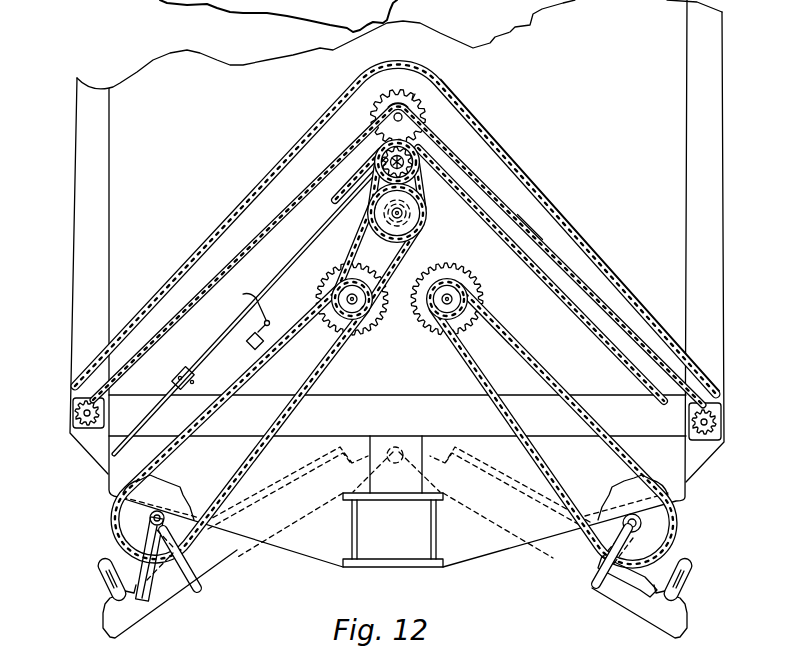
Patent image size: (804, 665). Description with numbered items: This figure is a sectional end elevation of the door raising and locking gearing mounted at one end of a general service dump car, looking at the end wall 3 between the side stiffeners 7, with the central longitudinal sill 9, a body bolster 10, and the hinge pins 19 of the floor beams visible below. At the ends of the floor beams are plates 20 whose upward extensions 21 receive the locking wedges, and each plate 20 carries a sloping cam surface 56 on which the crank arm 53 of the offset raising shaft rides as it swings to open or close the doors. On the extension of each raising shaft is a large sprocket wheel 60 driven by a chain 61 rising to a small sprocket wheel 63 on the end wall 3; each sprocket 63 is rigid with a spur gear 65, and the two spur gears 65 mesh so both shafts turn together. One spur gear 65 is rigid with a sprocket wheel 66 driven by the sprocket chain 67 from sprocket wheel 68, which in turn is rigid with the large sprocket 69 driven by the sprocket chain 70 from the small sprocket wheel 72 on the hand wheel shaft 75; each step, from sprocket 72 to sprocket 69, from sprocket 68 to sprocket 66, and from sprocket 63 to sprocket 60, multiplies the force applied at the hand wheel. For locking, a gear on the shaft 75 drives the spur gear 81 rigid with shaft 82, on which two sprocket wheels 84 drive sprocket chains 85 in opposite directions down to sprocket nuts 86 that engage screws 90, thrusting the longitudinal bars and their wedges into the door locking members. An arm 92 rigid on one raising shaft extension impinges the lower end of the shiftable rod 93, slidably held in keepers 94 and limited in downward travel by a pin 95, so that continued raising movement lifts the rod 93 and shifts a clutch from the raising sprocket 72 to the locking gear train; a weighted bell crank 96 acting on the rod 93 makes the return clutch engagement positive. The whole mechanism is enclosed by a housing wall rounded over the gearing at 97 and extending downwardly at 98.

The end wall 3 is at (399, 44).
The side stiffener 7 is at (73, 216).
The central longitudinal sill 9 is at (393, 501).
The body bolster 10 is at (395, 502).
The hinge pin 19 is at (400, 448).
The plate 20 is at (132, 622).
The upward extension 21 is at (99, 575).
The crank arm 53 is at (200, 578).
The cam surface 56 is at (168, 597).
The sprocket wheel 60 is at (182, 499).
The chain 61 is at (289, 412).
The sprocket wheel 63 is at (460, 299).
The spur gear 65 is at (345, 262).
The sprocket wheel 66 is at (333, 298).
The sprocket chain 67 is at (377, 255).
The sprocket wheel 68 is at (404, 226).
The sprocket 69 is at (410, 206).
The sprocket chain 70 is at (424, 186).
The small sprocket wheel 72 is at (437, 156).
The shaft 75 is at (372, 158).
The spur gear 81 is at (423, 115).
The shaft 82 is at (383, 117).
The sprocket wheel 84 is at (413, 106).
The sprocket chain 85 is at (168, 327).
The sprocket nut 86 is at (70, 412).
The screw 90 is at (70, 432).
The arm 92 is at (148, 562).
The shiftable rod 93 is at (193, 368).
The keeper 94 is at (176, 381).
The pin 95 is at (523, 224).
The weighted bell crank 96 is at (247, 324).
The rounded housing wall portion 97 is at (411, 52).
The downward housing wall portion 98 is at (589, 250).